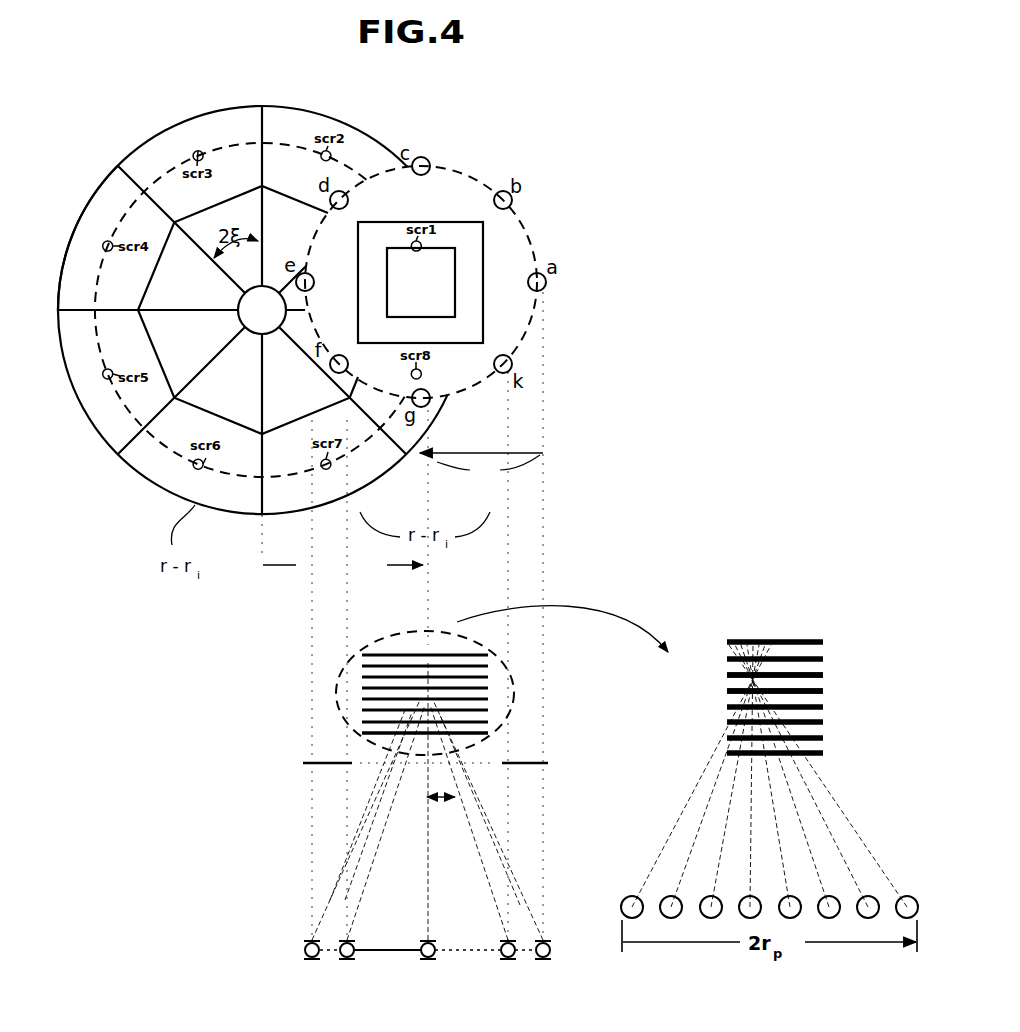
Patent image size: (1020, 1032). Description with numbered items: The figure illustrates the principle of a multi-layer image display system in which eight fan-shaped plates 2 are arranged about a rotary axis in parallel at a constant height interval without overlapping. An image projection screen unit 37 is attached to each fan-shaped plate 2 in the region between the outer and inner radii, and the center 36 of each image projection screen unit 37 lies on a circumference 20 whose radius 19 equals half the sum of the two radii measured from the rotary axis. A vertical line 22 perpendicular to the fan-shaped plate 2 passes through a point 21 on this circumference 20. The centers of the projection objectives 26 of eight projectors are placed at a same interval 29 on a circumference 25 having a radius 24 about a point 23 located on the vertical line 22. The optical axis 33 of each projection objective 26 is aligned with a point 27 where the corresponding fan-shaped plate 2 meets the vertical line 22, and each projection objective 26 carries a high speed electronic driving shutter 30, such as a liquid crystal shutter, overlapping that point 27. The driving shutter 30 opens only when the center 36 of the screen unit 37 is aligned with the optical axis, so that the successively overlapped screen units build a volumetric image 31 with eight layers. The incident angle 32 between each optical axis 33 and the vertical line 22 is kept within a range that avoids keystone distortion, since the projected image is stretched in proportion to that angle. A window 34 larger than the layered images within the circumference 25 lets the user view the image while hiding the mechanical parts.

The fan-shaped plate 2 is at (208, 110).
The image projection screen unit 37 is at (152, 143).
The center of the image projection screen unit 36 is at (103, 380).
The circumference 20 is at (165, 448).
The projection objective 26 is at (426, 157).
The interval 29 is at (474, 172).
The window 34 is at (483, 282).
The circumference 25 is at (518, 346).
The point 23 is at (422, 453).
The radius 24 is at (517, 455).
The radius 19 is at (288, 567).
The vertical line 22 is at (448, 610).
The volumetric image 31 is at (337, 697).
The point 21 is at (430, 735).
The incident angle 32 is at (818, 606).
The optical axis 33 is at (352, 910).
The high speed electronic driving shutter 30 is at (520, 940).
The point 27 is at (727, 692).